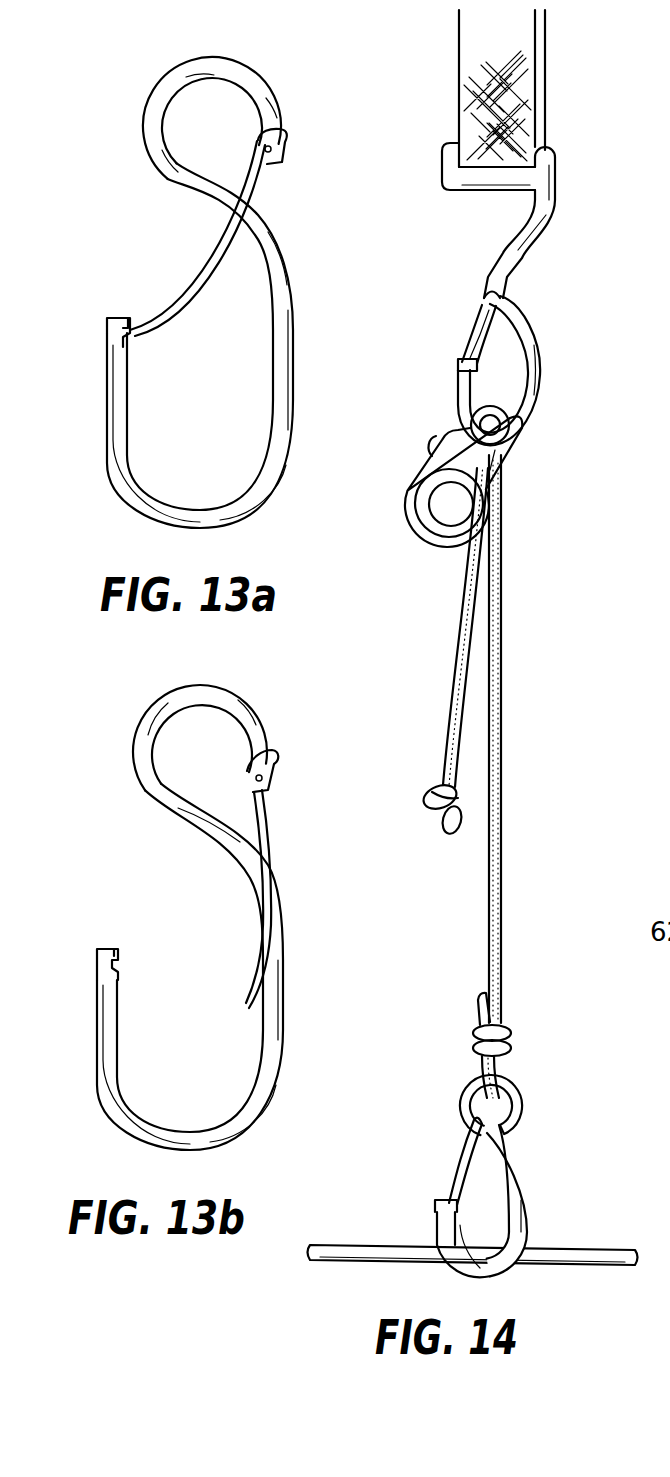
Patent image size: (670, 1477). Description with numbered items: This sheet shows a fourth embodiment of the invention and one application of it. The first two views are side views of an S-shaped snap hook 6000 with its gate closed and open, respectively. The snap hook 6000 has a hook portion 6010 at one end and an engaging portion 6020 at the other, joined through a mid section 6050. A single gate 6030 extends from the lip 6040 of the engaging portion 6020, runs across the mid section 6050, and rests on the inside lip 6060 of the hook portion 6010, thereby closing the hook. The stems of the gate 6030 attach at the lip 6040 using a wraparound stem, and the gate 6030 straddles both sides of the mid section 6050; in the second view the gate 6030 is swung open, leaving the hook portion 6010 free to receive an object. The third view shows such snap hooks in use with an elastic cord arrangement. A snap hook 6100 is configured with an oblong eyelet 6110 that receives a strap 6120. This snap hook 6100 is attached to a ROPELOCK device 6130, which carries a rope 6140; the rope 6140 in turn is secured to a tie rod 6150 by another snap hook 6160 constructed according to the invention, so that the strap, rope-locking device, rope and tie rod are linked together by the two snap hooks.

In FIG. 13A, the S-shaped snap hook 6000 is at (214, 292).
In FIG. 13B, the S-shaped snap hook 6000 is at (207, 923).
In FIG. 13A, the hook portion 6010 is at (108, 470).
In FIG. 13B, the hook portion 6010 is at (103, 1058).
In FIG. 13A, the engaging portion 6020 is at (145, 122).
In FIG. 13B, the engaging portion 6020 is at (138, 774).
In FIG. 13A, the gate 6030 is at (212, 252).
In FIG. 13B, the gate 6030 is at (279, 910).
In FIG. 13A, the lip 6040 is at (282, 154).
In FIG. 13B, the lip 6040 is at (272, 776).
In FIG. 13A, the mid section 6050 is at (288, 262).
In FIG. 13B, the mid section 6050 is at (255, 890).
In FIG. 13A, the inside lip 6060 is at (103, 332).
In FIG. 13B, the inside lip 6060 is at (96, 957).
In FIG. 14, the snap hook 6100 is at (552, 340).
In FIG. 14, the oblong eyelet 6110 is at (553, 180).
In FIG. 14, the strap 6120 is at (528, 116).
In FIG. 14, the ROPELOCK device 6130 is at (492, 452).
In FIG. 14, the rope 6140 is at (503, 703).
In FIG. 14, the tie rod 6150 is at (546, 1256).
In FIG. 14, the snap hook 6160 is at (541, 1148).